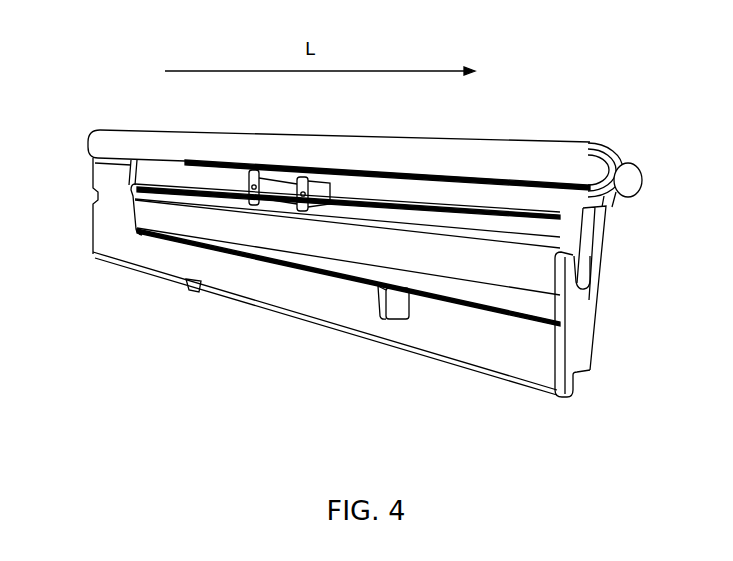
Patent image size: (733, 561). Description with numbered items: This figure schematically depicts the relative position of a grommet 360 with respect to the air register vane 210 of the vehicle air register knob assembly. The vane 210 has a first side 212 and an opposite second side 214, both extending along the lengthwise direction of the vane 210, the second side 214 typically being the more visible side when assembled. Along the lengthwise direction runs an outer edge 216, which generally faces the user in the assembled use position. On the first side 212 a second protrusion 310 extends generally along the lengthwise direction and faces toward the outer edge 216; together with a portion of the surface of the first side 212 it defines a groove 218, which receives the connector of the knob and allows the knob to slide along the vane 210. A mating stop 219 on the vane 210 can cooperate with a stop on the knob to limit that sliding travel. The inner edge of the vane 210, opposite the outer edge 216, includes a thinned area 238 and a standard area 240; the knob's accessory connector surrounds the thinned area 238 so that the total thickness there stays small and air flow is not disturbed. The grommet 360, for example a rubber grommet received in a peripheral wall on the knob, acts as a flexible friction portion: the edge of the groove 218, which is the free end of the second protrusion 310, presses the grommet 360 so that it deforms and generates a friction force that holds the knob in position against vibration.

The air register vane 210 is at (151, 128).
The outer edge 216 is at (438, 138).
The grommet 360 is at (278, 172).
The second protrusion 310 is at (598, 250).
The groove 218 is at (597, 282).
The second side 214 is at (592, 338).
The first side 212 is at (508, 352).
The mating stop 219 is at (378, 297).
The thinned area 238 is at (233, 287).
The standard area 240 is at (150, 272).